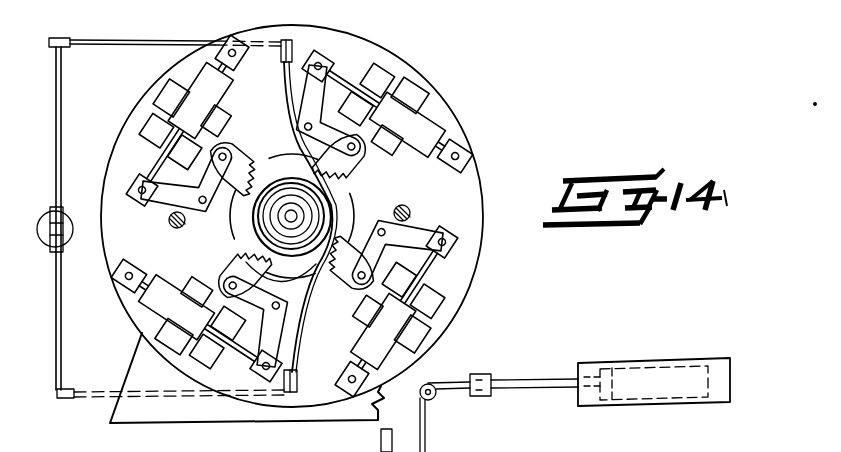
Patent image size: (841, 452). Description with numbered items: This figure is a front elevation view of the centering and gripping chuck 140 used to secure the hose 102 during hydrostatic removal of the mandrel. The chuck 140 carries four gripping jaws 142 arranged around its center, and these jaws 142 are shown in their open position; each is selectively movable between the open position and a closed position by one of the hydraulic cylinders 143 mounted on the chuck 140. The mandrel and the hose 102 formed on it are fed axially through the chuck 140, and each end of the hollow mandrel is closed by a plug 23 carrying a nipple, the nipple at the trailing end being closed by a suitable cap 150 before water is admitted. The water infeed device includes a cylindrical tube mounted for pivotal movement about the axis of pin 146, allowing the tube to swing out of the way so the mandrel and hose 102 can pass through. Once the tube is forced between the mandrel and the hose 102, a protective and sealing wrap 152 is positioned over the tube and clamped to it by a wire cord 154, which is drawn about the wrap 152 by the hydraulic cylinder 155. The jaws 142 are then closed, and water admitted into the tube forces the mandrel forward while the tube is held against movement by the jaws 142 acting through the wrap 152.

The chuck 140 is at (498, 151).
The hydraulic cylinders 143 is at (198, 70).
The gripping jaws 142 is at (278, 148).
The cap 150 is at (305, 216).
The hose 102 is at (312, 203).
The protective and sealing wrap 152 is at (328, 192).
The wire cord 154 is at (240, 240).
The hydraulic cylinder 155 is at (75, 222).
The plug 23 is at (281, 267).
The pin 146 is at (429, 425).